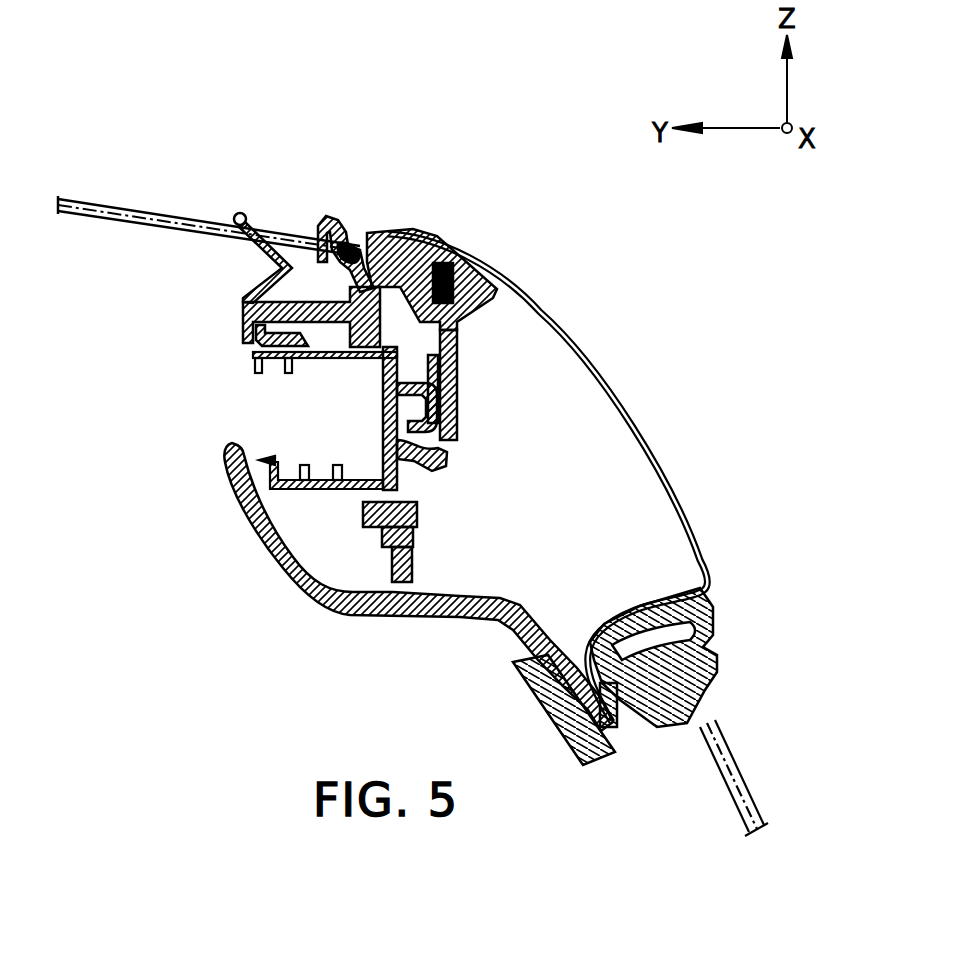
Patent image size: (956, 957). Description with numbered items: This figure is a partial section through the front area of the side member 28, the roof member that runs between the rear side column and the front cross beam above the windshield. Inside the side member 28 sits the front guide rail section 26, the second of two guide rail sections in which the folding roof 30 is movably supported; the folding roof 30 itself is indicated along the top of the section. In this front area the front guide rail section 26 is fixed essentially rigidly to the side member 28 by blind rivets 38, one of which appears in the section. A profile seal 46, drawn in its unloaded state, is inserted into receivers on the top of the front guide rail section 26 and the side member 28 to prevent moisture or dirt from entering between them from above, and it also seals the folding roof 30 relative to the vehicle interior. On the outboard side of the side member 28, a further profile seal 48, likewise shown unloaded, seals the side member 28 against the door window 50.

The folding roof 30 is at (148, 208).
The profile seal 46 is at (225, 302).
The front guide rail section 26 is at (322, 354).
The blind rivets 38 is at (417, 507).
The side member 28 is at (400, 612).
The profile seal 48 is at (742, 678).
The door window 50 is at (747, 780).